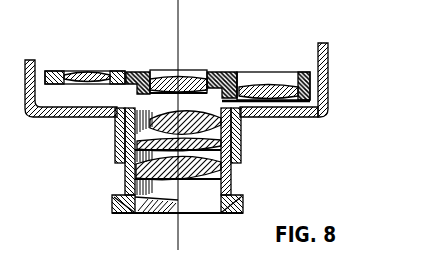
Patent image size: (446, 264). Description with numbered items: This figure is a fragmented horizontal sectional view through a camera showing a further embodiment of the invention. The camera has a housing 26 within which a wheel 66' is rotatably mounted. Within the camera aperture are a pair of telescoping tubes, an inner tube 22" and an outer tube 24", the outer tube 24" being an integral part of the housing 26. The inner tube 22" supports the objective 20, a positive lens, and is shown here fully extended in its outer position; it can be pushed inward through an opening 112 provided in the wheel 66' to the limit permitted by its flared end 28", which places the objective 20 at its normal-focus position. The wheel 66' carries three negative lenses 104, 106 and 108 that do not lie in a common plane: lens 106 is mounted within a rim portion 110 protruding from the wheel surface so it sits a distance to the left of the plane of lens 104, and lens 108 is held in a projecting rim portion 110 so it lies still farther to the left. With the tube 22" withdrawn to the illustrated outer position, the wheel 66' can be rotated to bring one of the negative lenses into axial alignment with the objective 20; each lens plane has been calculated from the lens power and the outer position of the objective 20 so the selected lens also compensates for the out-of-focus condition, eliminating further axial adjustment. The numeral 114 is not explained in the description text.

The objective 20 is at (200, 221).
The inner tube 22 is at (126, 179).
The outer tube 24 is at (291, 134).
The camera housing 26 is at (78, 118).
The flared end 28 is at (287, 196).
The wheel 66' is at (119, 57).
The negative lens 104 is at (84, 71).
The negative lens 106 is at (161, 70).
The negative lens 108 is at (248, 72).
The rim portion 110 is at (222, 71).
The opening 112 is at (311, 114).
The gap / seam 114 is at (234, 71).